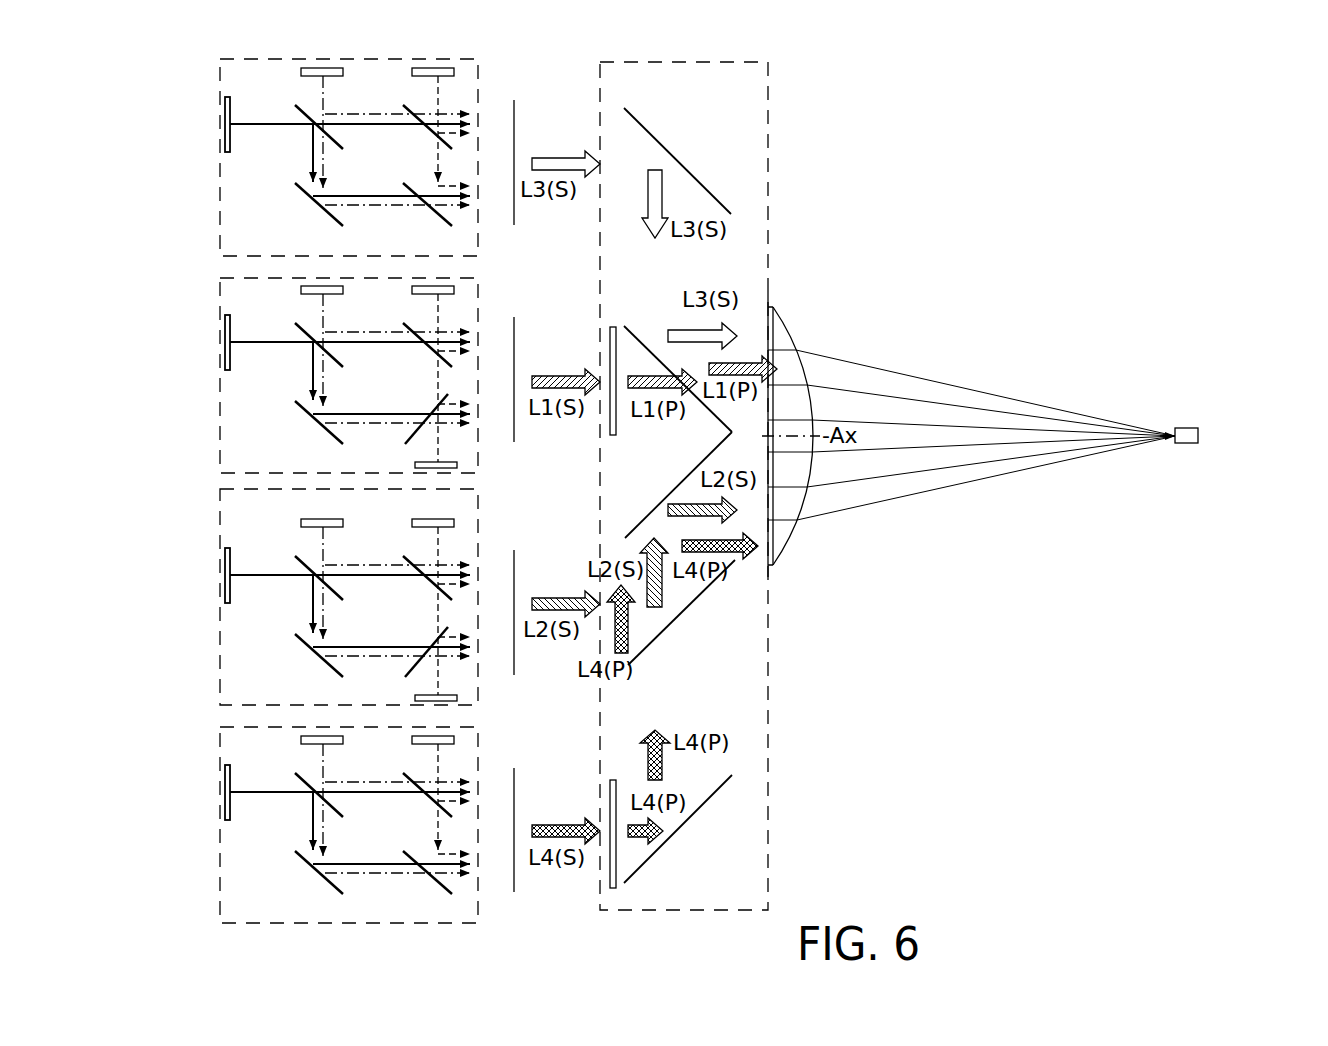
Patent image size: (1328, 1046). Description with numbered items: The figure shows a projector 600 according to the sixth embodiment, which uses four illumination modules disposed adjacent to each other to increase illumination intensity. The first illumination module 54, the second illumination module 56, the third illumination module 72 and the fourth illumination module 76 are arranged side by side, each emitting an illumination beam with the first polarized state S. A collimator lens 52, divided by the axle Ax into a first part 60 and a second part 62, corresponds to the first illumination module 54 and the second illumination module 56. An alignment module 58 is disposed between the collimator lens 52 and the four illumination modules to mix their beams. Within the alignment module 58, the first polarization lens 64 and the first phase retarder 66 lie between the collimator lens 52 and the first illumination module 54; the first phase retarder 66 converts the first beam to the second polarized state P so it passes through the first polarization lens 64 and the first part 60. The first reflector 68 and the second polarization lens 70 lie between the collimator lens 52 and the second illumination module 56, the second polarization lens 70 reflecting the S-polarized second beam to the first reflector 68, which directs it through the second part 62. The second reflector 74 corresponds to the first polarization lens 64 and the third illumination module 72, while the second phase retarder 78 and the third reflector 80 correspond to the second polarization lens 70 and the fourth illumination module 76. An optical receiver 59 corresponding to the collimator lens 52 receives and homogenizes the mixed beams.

The projector 600 is at (1186, 194).
The third illumination module 72 is at (218, 173).
The first illumination module 54 is at (218, 385).
The second illumination module 56 is at (218, 592).
The fourth illumination module 76 is at (218, 798).
The alignment module 58 is at (768, 92).
The second reflector 74 is at (652, 133).
The first phase retarder 66 is at (608, 353).
The first polarization lens 64 is at (640, 340).
The first reflector 68 is at (640, 520).
The second polarization lens 70 is at (650, 647).
The second phase retarder 78 is at (608, 803).
The third reflector 80 is at (667, 840).
The first part 60 is at (777, 322).
The second part 62 is at (780, 533).
The collimator lens 52 is at (813, 431).
The optical receiver 59 is at (1187, 427).